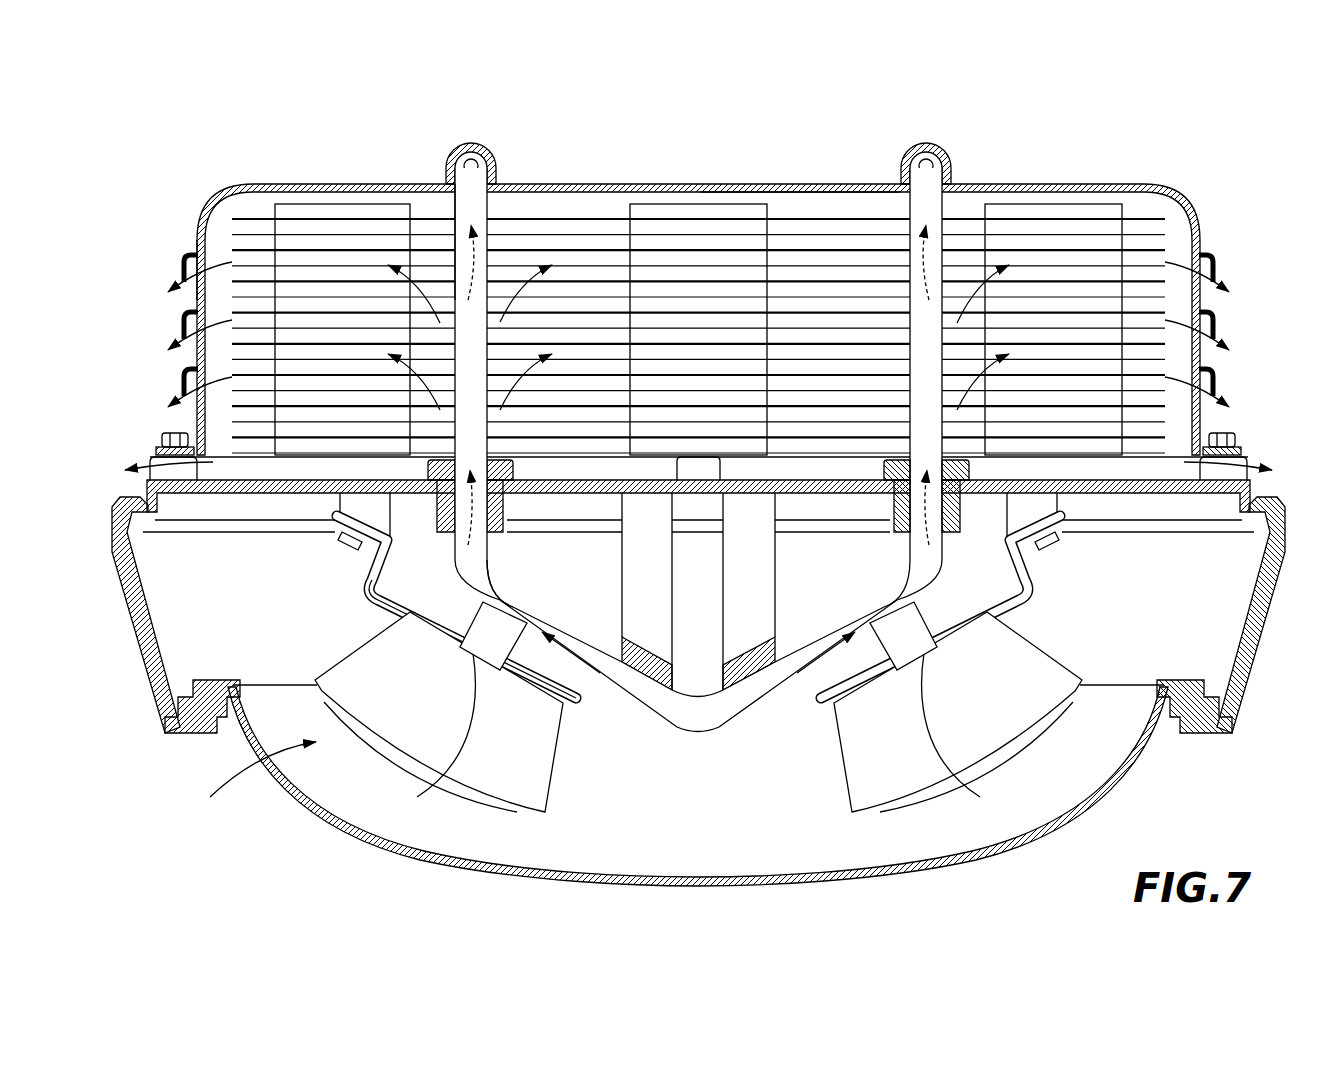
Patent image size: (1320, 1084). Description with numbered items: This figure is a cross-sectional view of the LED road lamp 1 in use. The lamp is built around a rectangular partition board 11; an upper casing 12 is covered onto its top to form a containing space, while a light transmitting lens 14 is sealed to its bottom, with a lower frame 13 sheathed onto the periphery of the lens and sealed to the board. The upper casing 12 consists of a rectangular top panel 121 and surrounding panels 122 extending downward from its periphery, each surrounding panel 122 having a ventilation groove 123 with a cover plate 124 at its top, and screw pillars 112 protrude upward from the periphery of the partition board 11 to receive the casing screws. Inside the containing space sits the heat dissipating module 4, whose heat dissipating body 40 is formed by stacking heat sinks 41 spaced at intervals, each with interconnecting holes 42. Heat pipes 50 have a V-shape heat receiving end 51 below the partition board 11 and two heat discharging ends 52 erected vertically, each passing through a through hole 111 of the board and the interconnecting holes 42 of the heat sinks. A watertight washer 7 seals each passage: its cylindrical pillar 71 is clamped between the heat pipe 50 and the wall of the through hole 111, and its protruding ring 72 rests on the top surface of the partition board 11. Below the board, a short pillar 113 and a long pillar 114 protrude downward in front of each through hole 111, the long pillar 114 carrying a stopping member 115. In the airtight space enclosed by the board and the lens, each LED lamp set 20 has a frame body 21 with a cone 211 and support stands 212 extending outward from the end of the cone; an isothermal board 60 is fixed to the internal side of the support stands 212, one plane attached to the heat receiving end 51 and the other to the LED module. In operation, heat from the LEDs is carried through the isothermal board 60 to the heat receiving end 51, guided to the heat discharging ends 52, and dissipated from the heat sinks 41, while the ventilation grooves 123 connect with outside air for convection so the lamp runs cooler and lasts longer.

The LED road lamp 1 is at (688, 506).
The heat dissipating module 4 is at (420, 205).
The watertight washer 7 is at (497, 537).
The partition board 11 is at (200, 495).
The upper casing 12 is at (700, 181).
The lower frame 13 is at (152, 628).
The light transmitting lens 14 is at (345, 840).
The LED lamp set 20 is at (250, 753).
The frame body 21 is at (468, 760).
The heat dissipating body 40 is at (573, 218).
The heat sink 41 is at (543, 218).
The interconnecting hole 42 is at (491, 178).
The heat pipe 50 is at (455, 160).
The heat receiving end 51 is at (573, 642).
The heat discharging end 52 is at (460, 240).
The isothermal board 60 is at (584, 695).
The cylindrical pillar 71 is at (507, 500).
The protruding ring 72 is at (543, 493).
The through hole 111 is at (368, 572).
The screw pillar 112 is at (153, 465).
The short pillar 113 is at (340, 505).
The long pillar 114 is at (650, 590).
The stopping member 115 is at (700, 718).
The top panel 121 is at (800, 185).
The surrounding panel 122 is at (188, 320).
The ventilation groove 123 is at (200, 237).
The cover plate 124 is at (188, 262).
The cone 211 is at (510, 768).
The support stand 212 is at (510, 768).